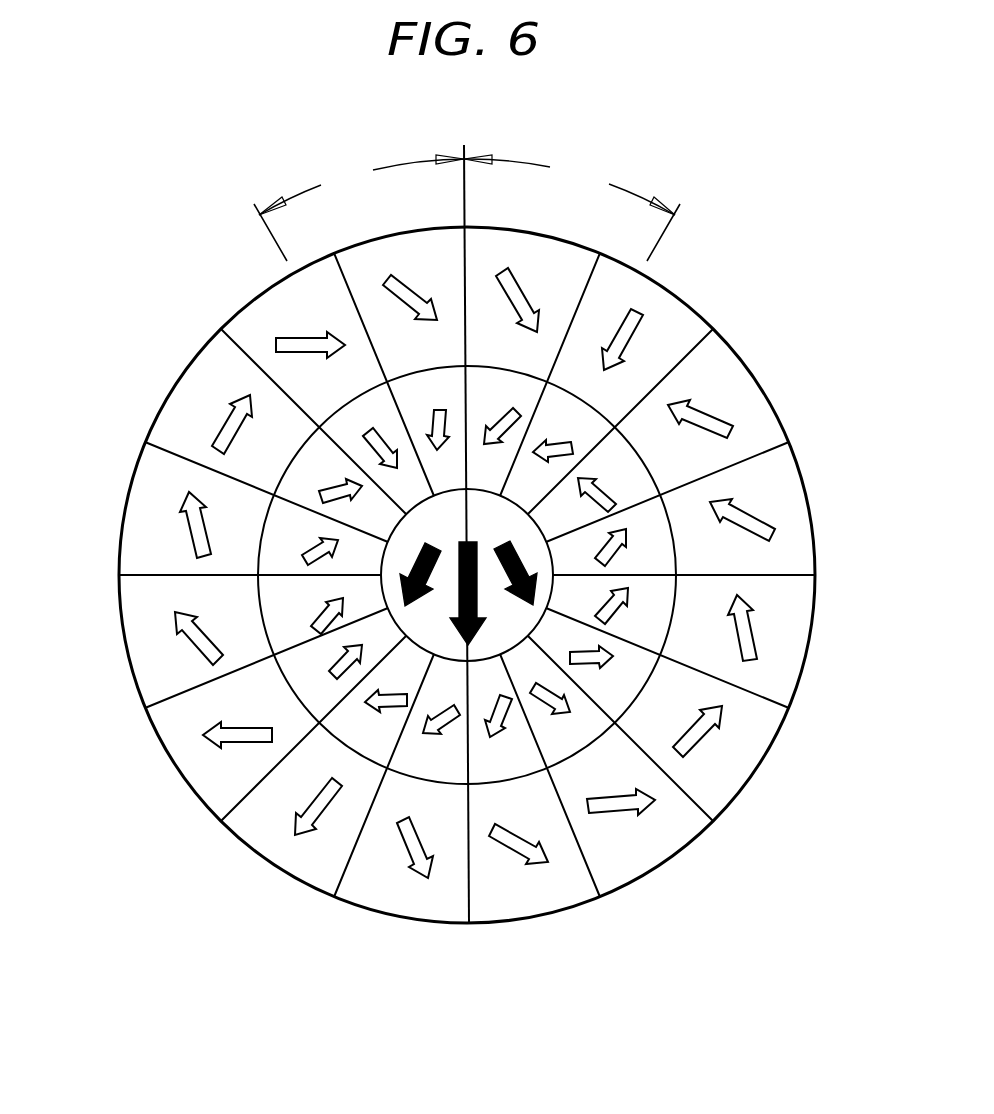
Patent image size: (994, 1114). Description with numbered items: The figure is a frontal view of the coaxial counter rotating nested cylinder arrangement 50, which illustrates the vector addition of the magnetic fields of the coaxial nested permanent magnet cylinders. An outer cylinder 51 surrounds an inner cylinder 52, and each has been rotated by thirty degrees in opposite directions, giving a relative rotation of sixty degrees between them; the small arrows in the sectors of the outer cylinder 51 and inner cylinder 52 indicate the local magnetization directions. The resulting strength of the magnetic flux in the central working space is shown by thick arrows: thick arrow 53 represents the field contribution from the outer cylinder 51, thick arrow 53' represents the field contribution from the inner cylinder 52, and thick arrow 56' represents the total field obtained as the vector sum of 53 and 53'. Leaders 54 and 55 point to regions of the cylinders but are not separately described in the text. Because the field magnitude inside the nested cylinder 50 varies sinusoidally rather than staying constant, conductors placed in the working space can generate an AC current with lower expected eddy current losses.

The coaxial counter rotating nested cylinder arrangement 50 is at (66, 200).
The outer cylinder 51 is at (724, 377).
The inner cylinder 52 is at (653, 613).
The thick arrow 53 is at (246, 570).
The thick arrow 53' is at (701, 566).
The outer ring segment 54 is at (718, 761).
The inner ring segment 55 is at (317, 462).
The thick arrow 56' is at (349, 674).